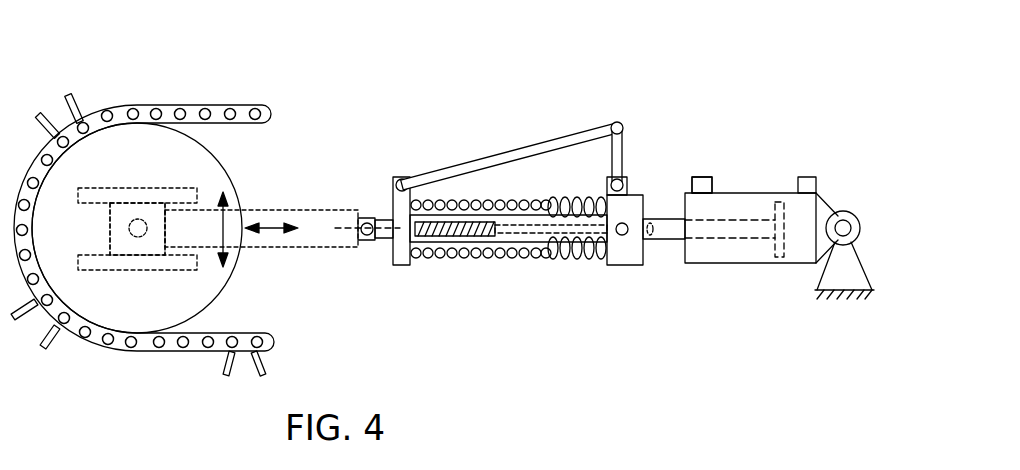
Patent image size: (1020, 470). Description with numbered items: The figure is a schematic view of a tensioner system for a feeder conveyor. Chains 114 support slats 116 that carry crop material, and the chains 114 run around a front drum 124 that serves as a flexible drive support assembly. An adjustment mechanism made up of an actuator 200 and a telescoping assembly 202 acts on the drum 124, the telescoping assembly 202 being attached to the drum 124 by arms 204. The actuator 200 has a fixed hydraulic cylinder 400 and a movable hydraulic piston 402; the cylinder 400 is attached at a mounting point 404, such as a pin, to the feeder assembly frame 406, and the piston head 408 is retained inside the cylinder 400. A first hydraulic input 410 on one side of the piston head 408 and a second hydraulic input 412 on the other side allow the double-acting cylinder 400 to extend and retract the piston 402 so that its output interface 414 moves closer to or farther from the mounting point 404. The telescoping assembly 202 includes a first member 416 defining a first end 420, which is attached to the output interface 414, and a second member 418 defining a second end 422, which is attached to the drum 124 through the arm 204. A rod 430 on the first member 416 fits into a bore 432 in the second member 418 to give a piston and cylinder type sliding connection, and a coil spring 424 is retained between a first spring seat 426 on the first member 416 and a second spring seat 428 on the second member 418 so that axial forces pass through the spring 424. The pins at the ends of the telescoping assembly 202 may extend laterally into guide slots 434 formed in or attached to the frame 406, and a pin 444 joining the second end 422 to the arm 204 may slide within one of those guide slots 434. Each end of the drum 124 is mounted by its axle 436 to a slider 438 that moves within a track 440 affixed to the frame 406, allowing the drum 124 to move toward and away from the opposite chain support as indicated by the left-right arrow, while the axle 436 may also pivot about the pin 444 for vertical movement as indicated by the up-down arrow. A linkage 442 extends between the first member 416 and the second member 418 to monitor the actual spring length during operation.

The chains 114 is at (205, 108).
The slats 116 is at (78, 110).
The front drum 124 is at (172, 308).
The actuator 200 is at (798, 210).
The telescoping assembly 202 is at (548, 238).
The arms 204 is at (302, 218).
The hydraulic cylinder 400 is at (745, 202).
The hydraulic piston 402 is at (674, 218).
The mounting point 404 is at (844, 226).
The feeder assembly frame 406 is at (846, 282).
The piston head 408 is at (776, 200).
The first hydraulic input 410 is at (813, 177).
The second hydraulic input 412 is at (707, 176).
The output interface 414 is at (644, 244).
The first member 416 is at (622, 256).
The second member 418 is at (407, 254).
The first end 420 is at (645, 208).
The second end 422 is at (363, 234).
The spring 424 is at (528, 258).
The first spring seat 426 is at (597, 210).
The second spring seat 428 is at (409, 182).
The rod 430 is at (590, 254).
The bore 432 is at (465, 214).
The guide slots 434 is at (465, 259).
The drum axle 436 is at (147, 228).
The slider 438 is at (155, 210).
The track 440 is at (147, 271).
The linkage 442 is at (533, 125).
The pin 444 is at (363, 217).